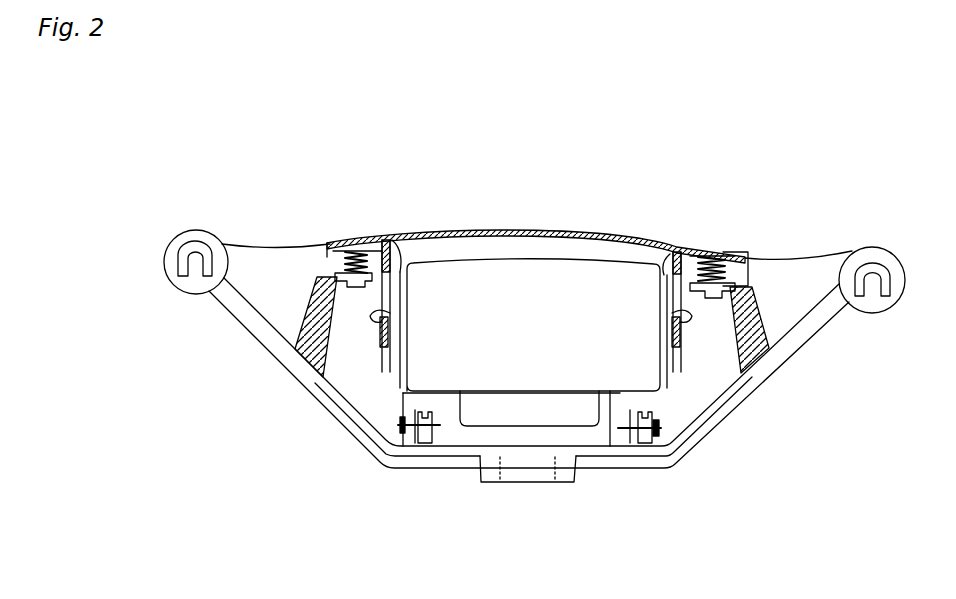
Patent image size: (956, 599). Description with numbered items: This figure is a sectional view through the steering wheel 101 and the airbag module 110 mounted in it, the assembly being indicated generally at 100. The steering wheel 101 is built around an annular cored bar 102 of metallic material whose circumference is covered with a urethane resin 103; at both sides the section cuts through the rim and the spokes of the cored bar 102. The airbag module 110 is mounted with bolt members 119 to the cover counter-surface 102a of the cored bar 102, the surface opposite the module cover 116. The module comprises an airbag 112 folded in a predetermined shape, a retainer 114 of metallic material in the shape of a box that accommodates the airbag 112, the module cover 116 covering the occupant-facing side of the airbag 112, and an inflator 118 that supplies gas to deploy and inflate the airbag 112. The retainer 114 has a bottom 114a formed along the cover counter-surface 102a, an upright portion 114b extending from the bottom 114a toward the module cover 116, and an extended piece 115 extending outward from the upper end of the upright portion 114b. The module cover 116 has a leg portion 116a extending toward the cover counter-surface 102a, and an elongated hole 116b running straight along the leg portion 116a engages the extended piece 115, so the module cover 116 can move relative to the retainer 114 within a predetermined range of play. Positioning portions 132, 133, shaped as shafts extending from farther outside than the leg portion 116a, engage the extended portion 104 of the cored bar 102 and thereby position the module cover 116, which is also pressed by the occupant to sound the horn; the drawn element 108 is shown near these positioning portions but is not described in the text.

The driver airbag module 100 is at (540, 167).
The steering wheel 101 is at (189, 232).
The cored bar 102 is at (247, 262).
The cover counter-surface 102a is at (457, 458).
The urethane resin 103 is at (197, 282).
The extended portion 104 is at (283, 327).
The bolt and spring 108 is at (347, 242).
The airbag module 110 is at (478, 228).
The airbag 112 is at (503, 365).
The retainer 114 is at (680, 410).
The bottom 114a is at (607, 400).
The upright portion 114b is at (392, 378).
The extended piece 115 is at (368, 326).
The module cover 116 is at (593, 230).
The leg portion 116a is at (395, 268).
The elongated hole 116b is at (403, 272).
The inflator 118 is at (560, 428).
The bolt member 119 is at (384, 444).
The positioning portion 132 is at (738, 275).
The positioning portion 133 is at (338, 268).